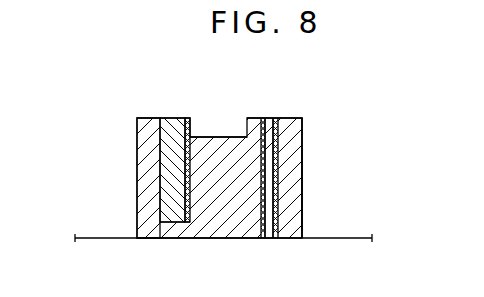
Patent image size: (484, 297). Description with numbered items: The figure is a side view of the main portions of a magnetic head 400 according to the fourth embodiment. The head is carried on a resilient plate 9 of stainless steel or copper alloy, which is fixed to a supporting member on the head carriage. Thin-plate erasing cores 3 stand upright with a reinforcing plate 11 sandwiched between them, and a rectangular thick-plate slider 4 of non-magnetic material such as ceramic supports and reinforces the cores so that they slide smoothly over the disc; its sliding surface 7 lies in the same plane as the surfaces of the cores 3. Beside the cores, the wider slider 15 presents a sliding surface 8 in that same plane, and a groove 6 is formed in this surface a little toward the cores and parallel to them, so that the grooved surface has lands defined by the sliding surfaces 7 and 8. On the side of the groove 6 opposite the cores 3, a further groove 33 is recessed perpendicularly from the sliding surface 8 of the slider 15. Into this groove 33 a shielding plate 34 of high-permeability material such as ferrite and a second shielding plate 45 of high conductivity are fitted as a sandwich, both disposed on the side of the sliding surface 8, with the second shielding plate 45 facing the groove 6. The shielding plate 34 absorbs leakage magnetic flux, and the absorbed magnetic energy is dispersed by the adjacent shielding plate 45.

The erasing cores 3 is at (277, 228).
The slider 4 is at (293, 221).
The groove 6 is at (221, 137).
The sliding surface 7 is at (287, 118).
The sliding surface 8 is at (152, 118).
The resilient plate 9 is at (347, 240).
The reinforcing plate 11 is at (258, 204).
The slider 15 is at (205, 223).
The groove 33 is at (166, 196).
The shielding plate 34 is at (170, 222).
The second shielding plate 45 is at (190, 118).
The magnetic head 400 is at (302, 188).